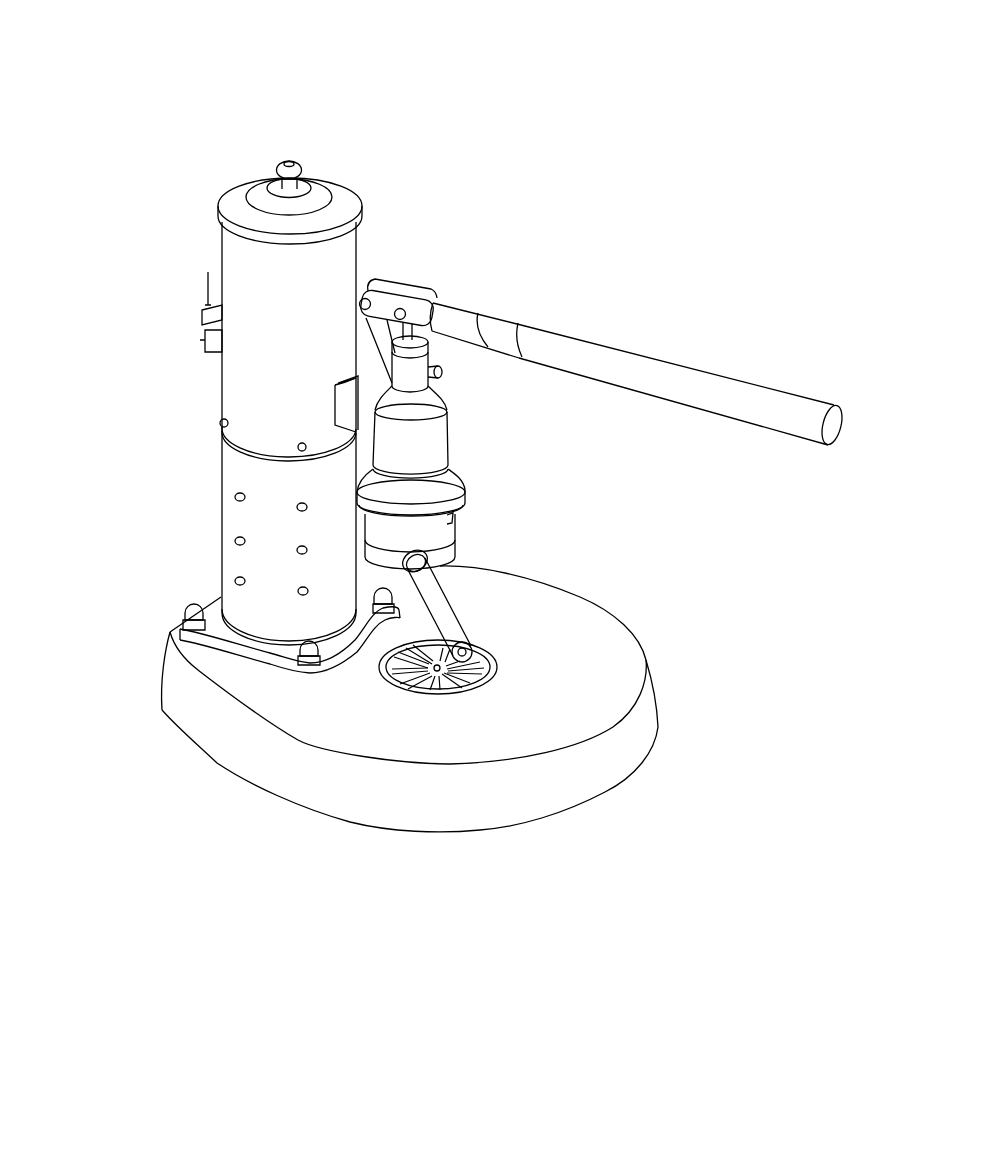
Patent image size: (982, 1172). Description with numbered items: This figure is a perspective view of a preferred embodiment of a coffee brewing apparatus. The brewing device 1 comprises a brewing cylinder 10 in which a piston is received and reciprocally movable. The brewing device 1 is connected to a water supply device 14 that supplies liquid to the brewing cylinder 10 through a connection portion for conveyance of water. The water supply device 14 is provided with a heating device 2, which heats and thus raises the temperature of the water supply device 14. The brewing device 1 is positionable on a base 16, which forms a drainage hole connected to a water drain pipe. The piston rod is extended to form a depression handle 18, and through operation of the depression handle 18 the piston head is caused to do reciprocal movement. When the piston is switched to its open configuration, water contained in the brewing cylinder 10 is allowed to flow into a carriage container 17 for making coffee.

The brewing device 1 is at (443, 204).
The heating device 2 is at (197, 517).
The water supply device 14 is at (232, 392).
The brewing cylinder 10 is at (438, 440).
The carriage container 17 is at (452, 546).
The depression handle 18 is at (680, 380).
The base 16 is at (522, 790).